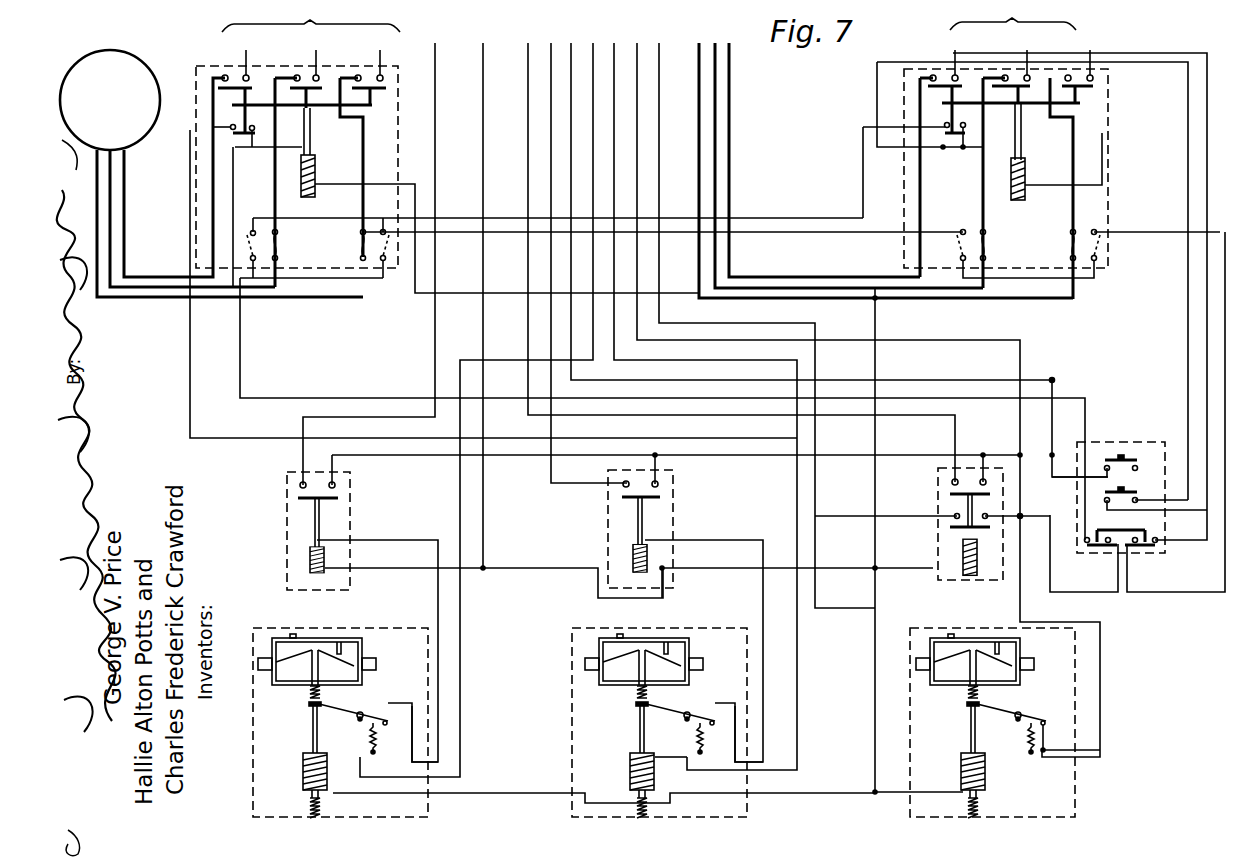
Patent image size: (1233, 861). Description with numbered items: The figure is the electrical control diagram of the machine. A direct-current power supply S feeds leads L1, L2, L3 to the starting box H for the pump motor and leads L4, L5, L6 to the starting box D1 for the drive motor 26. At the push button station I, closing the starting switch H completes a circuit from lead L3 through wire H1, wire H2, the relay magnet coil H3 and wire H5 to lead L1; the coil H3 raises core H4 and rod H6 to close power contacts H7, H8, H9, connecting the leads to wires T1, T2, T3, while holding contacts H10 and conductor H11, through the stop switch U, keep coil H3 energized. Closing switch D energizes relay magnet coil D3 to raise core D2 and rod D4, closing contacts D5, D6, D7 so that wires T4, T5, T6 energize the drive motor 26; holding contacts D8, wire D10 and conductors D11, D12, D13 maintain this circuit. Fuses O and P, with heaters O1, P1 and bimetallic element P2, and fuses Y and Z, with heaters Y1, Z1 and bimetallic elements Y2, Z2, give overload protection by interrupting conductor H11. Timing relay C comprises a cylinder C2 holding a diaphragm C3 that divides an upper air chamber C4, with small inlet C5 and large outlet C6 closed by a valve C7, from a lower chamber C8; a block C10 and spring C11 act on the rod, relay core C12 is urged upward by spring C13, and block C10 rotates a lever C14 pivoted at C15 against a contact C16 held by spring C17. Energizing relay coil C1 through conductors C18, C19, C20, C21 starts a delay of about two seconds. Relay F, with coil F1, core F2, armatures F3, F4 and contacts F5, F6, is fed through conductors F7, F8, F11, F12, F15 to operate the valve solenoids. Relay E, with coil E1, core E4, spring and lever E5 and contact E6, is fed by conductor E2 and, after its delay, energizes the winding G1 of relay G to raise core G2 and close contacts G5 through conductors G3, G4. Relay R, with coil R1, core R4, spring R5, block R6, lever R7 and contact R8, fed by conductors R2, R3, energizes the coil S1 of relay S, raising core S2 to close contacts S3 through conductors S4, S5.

The drive motor 26 is at (110, 100).
The power supply source S is at (608, 504).
The starting box D1 is at (192, 65).
The power supply wire L6 is at (246, 57).
The power supply wire L5 is at (314, 57).
The power supply wire L4 is at (380, 57).
The power supply lead L3 is at (953, 57).
The power supply wire L2 is at (1023, 57).
The power supply wire L1 is at (1088, 57).
The contact D5 is at (232, 70).
The contact D6 is at (294, 70).
The contact D7 is at (364, 70).
The holding contacts D8 is at (242, 126).
The conductor D10 is at (260, 154).
The rod D4 is at (310, 150).
The relay magnet coil D3 is at (316, 160).
The relay core D2 is at (316, 190).
The conductor D11 is at (1062, 378).
The conductor D12 is at (570, 46).
The conductor D13 is at (642, 54).
The fuse O is at (277, 246).
The heater O1 is at (282, 258).
The fuse P is at (358, 246).
The heater P1 is at (358, 258).
The bimetallic element P2 is at (384, 244).
The motor wire T1 is at (697, 112).
The motor wire T2 is at (716, 82).
The motor wire T3 is at (730, 132).
The motor wire T4 is at (124, 302).
The motor wire T5 is at (169, 296).
The motor wire T6 is at (153, 275).
The conductor G4 is at (432, 83).
The conductor F15 is at (480, 83).
The conductor F12 is at (526, 83).
The conductor S5 is at (544, 46).
The conductor E2 is at (592, 48).
The conductor R3 is at (620, 46).
The conductor C20 is at (658, 73).
The conductor C21 is at (190, 370).
The conductor C18 is at (880, 320).
The conductor C19 is at (516, 794).
The starting switch H is at (1110, 110).
The power circuit contact H7 is at (948, 104).
The power circuit contact H8 is at (1009, 89).
The power circuit contact H9 is at (1074, 89).
The holding contacts H10 is at (946, 124).
The rod H6 is at (1014, 130).
The relay magnet coil H3 is at (1022, 154).
The relay core H4 is at (1025, 192).
The wire H5 is at (1102, 132).
The wire H2 is at (886, 150).
The wire H1 is at (1188, 171).
The conductor H11 is at (1160, 230).
The fuse Y is at (988, 246).
The heater element Y1 is at (988, 259).
The bimetallic element Y2 is at (970, 236).
The fuse Z is at (1066, 246).
The heater element Z1 is at (1066, 259).
The bimetallic element Z2 is at (1090, 236).
The relay G is at (279, 474).
The relay coil G1 is at (312, 544).
The relay core G2 is at (316, 576).
The conductor G3 is at (393, 544).
The contacts G5 is at (314, 480).
The relay coil S1 is at (634, 546).
The relay core S2 is at (640, 574).
The contacts S3 is at (640, 480).
The conductor S4 is at (720, 540).
The relay F is at (928, 480).
The relay coil F1 is at (974, 568).
The relay core F2 is at (968, 574).
The armature F3 is at (938, 494).
The armature F4 is at (938, 528).
The contacts F5 is at (969, 470).
The contacts F6 is at (972, 516).
The conductor F7 is at (514, 568).
The conductor F8 is at (1028, 566).
The conductor F11 is at (994, 456).
The push button station I is at (1144, 432).
The drive switch D is at (1140, 460).
The stop switch U is at (1156, 530).
The time delay relay E is at (288, 630).
The relay coil E1 is at (304, 773).
The relay core E4 is at (309, 752).
The lever E5 is at (346, 710).
The contact E6 is at (388, 702).
The time delay relay R is at (580, 630).
The relay coil R1 is at (630, 762).
The conductor R2 is at (666, 756).
The relay core R4 is at (634, 750).
The spring R5 is at (672, 812).
The block R6 is at (636, 704).
The lever R7 is at (674, 710).
The contact R8 is at (716, 704).
The timing relay C is at (902, 632).
The relay coil C1 is at (962, 762).
The cylinder C2 is at (1024, 652).
The diaphragm C3 is at (1012, 654).
The upper air chamber C4 is at (930, 648).
The air inlet C5 is at (946, 634).
The air outlet C6 is at (990, 634).
The valve C7 is at (1002, 638).
The lower chamber C8 is at (930, 672).
The block C10 is at (962, 708).
The spring C11 is at (960, 698).
The relay core C12 is at (968, 754).
The spring C13 is at (986, 810).
The lever C14 is at (1010, 712).
The pivot C15 is at (1026, 712).
The contact C16 is at (1042, 734).
The spring C17 is at (1032, 752).